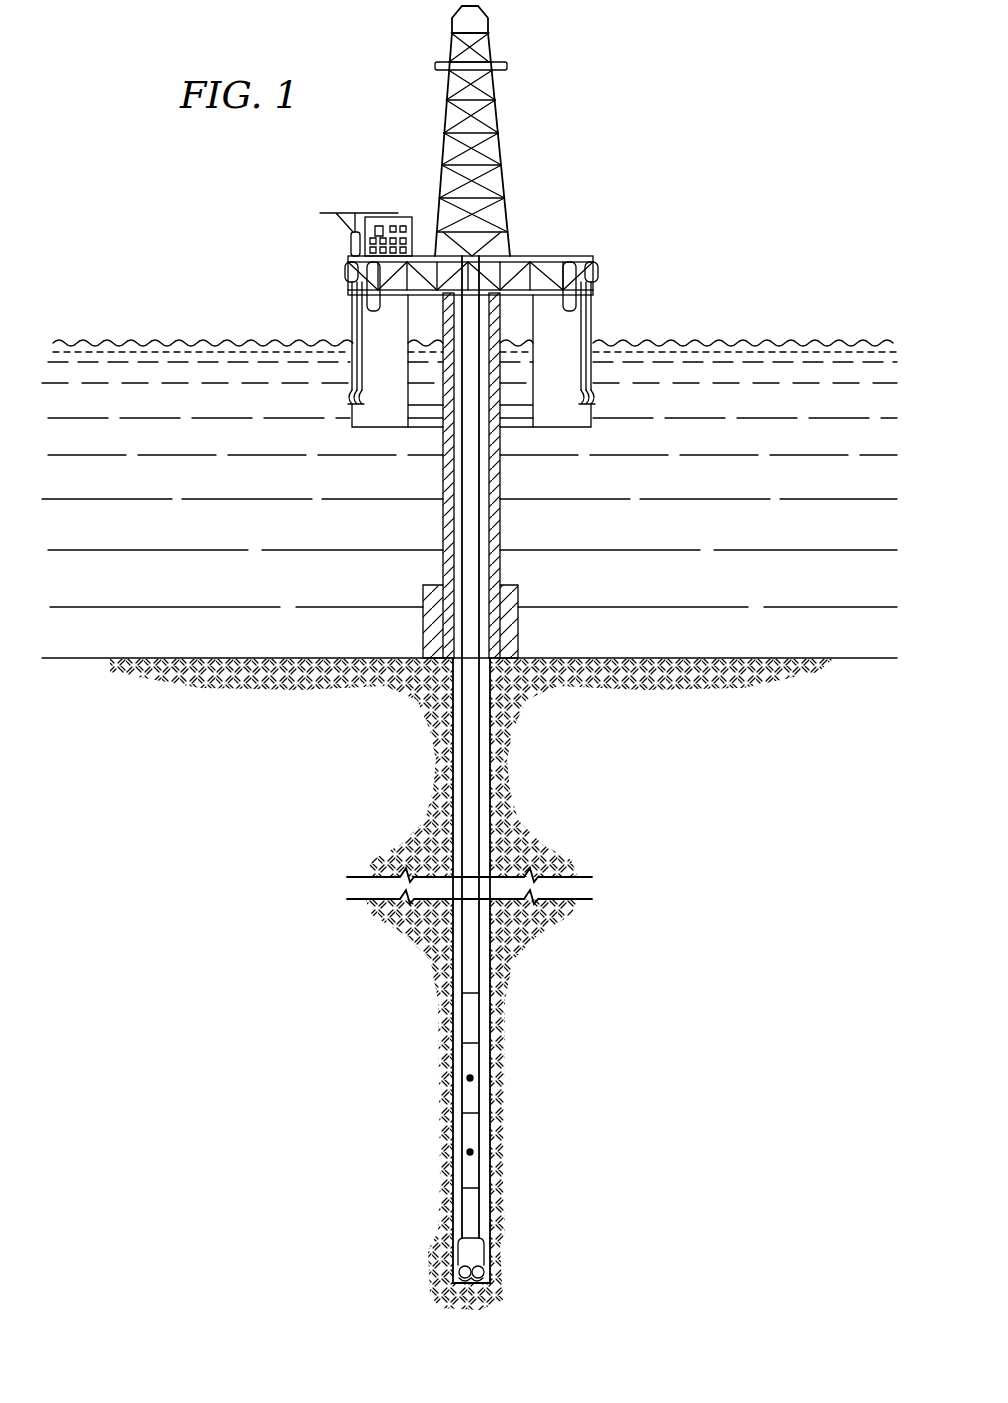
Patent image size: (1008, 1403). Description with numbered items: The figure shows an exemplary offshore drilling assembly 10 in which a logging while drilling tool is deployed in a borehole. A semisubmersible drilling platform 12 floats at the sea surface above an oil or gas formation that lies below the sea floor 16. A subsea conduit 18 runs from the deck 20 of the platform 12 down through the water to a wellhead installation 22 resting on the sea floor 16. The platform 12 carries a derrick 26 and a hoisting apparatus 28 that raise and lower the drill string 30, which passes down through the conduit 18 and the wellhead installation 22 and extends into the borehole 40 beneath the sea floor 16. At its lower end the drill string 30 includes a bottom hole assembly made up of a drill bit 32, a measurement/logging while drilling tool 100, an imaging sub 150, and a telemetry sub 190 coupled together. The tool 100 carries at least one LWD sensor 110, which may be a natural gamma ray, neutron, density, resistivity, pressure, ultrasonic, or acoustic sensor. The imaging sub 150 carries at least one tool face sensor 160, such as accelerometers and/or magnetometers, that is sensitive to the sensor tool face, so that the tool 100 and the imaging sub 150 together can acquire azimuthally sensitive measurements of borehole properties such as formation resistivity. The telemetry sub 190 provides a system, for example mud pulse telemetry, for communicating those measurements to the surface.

The offshore drilling assembly 10 is at (577, 136).
The semisubmersible drilling platform 12 is at (586, 256).
The sea floor 16 is at (752, 658).
The subsea conduit 18 is at (500, 520).
The deck 20 is at (596, 300).
The wellhead installation 22 is at (515, 585).
The derrick 26 is at (472, 237).
The hoisting apparatus 28 is at (495, 48).
The drill string 30 is at (470, 441).
The drill bit 32 is at (490, 1270).
The borehole 40 is at (452, 784).
The measurement/logging while drilling (MLWD) tool 100 is at (470, 1130).
The LWD sensor 110 is at (468, 1152).
The imaging sub 150 is at (470, 1058).
The tool face (azimuth) sensor 160 is at (468, 1078).
The telemetry sub 190 is at (462, 1018).